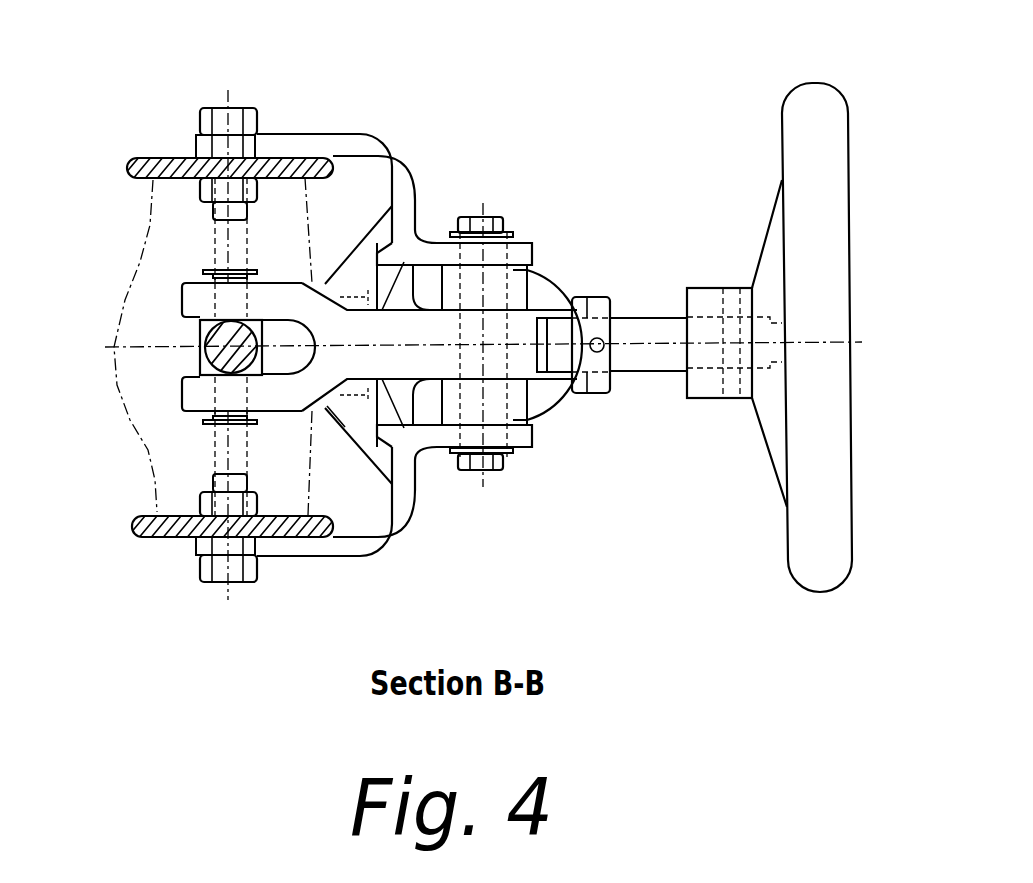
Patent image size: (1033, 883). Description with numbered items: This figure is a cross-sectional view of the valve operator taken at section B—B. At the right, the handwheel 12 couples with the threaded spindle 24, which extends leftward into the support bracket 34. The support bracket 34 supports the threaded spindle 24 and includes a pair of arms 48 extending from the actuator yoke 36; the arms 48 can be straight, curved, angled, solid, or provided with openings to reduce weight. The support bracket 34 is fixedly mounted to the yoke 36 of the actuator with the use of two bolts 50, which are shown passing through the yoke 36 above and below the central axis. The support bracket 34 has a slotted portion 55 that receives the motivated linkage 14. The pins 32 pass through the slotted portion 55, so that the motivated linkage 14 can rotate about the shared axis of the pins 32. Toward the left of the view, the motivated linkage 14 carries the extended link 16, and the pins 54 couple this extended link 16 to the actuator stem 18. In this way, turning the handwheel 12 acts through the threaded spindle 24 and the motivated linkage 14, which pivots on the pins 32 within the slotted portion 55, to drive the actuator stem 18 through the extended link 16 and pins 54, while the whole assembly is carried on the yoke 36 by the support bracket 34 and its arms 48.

The handwheel 12 is at (816, 100).
The motivated linkage 14 is at (399, 245).
The extended link 16 is at (190, 303).
The actuator stem 18 is at (200, 347).
The threaded spindle 24 is at (660, 327).
The pins 32 is at (490, 216).
The support bracket 34 is at (395, 468).
The actuator yoke 36 is at (152, 157).
The arms 48 is at (340, 143).
The bolts 50 is at (228, 107).
The pins 54 is at (217, 268).
The slotted portion 55 is at (513, 290).